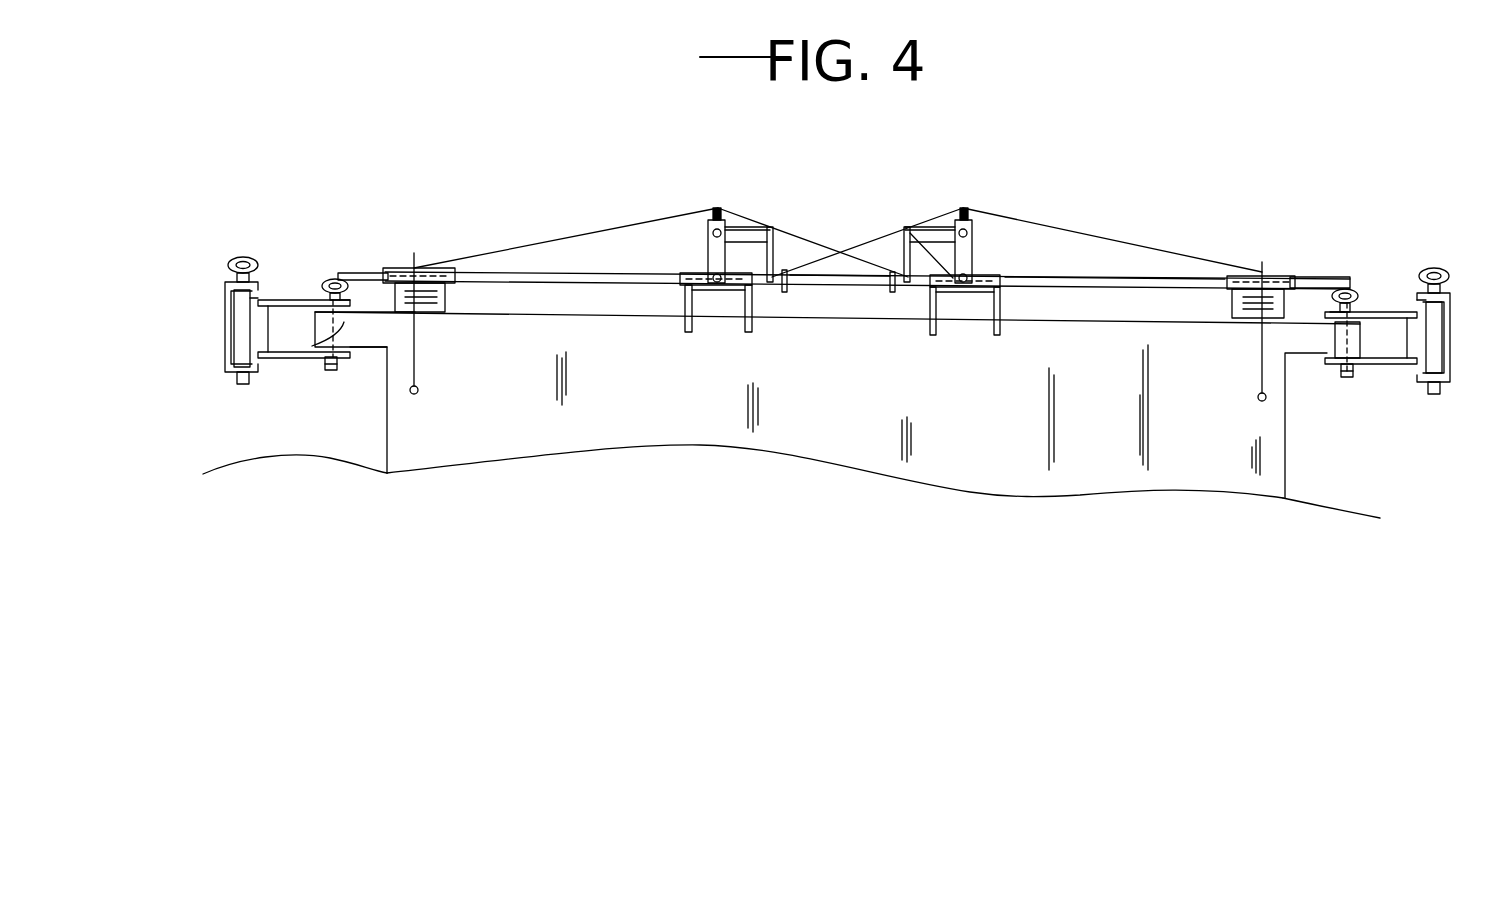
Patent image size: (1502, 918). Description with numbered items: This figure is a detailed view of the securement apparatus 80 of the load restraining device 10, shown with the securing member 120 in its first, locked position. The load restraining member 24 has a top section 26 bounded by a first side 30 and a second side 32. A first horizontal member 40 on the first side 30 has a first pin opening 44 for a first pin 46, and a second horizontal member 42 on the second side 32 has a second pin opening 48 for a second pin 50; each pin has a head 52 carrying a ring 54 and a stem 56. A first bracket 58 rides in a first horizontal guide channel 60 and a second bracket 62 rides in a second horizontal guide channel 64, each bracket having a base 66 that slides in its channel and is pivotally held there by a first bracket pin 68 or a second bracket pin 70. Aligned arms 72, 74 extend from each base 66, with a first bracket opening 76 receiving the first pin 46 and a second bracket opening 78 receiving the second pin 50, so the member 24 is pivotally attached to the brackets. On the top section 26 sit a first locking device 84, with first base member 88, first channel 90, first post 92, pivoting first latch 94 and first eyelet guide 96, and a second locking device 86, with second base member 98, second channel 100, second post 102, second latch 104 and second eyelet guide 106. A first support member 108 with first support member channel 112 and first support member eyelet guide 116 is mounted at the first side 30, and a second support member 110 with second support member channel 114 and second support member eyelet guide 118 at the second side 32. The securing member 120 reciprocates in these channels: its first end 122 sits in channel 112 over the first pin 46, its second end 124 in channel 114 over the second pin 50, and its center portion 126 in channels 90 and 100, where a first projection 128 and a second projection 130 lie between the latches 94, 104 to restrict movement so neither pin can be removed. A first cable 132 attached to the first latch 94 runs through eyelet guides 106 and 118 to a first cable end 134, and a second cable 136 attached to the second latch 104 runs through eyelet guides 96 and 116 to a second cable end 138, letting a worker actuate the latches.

The load restraining device 10 is at (580, 122).
The load restraining member 24 is at (962, 470).
The top section 26 is at (527, 312).
The first side 30 is at (1286, 472).
The second side 32 is at (385, 450).
The first horizontal member 40 is at (1310, 362).
The second horizontal member 42 is at (368, 337).
The first pin opening 44 is at (1372, 330).
The first pin 46 is at (1378, 311).
The second pin opening 48 is at (312, 340).
The second pin 50 is at (294, 303).
The head 52 is at (332, 285).
The ring 54 is at (346, 298).
The stem 56 is at (332, 370).
The first bracket 58 is at (1404, 314).
The first horizontal guide channel 60 is at (1451, 312).
The second bracket 62 is at (278, 298).
The second horizontal guide channel 64 is at (227, 300).
The base 66 is at (245, 325).
The first bracket pin 68 is at (1452, 277).
The second bracket pin 70 is at (237, 262).
The arm 72 is at (283, 300).
The arm 74 is at (262, 374).
The first bracket opening 76 is at (1340, 338).
The second bracket opening 78 is at (332, 324).
The securement apparatus 80 is at (1030, 128).
The first locking device 84 is at (1002, 308).
The second locking device 86 is at (686, 308).
The first base member 88 is at (930, 305).
The first channel 90 is at (997, 276).
The first post 92 is at (988, 240).
The first latch 94 is at (907, 230).
The first eyelet guide 96 is at (966, 208).
The second base member 98 is at (743, 335).
The second channel 100 is at (686, 275).
The second post 102 is at (710, 238).
The second latch 104 is at (762, 225).
The second eyelet guide 106 is at (722, 210).
The first support member 108 is at (1275, 278).
The second support member 110 is at (446, 270).
The first support member channel 112 is at (1233, 274).
The second support member channel 114 is at (434, 274).
The first support member eyelet guide 116 is at (1258, 262).
The second support member eyelet guide 118 is at (415, 256).
The securing member 120 is at (1075, 278).
The first end 122 is at (1303, 277).
The second end 124 is at (345, 266).
The center portion 126 is at (822, 292).
The first projection 128 is at (892, 297).
The second projection 130 is at (786, 298).
The first cable 132 is at (538, 238).
The first cable end 134 is at (418, 389).
The second cable 136 is at (1142, 238).
The second cable end 138 is at (1259, 399).